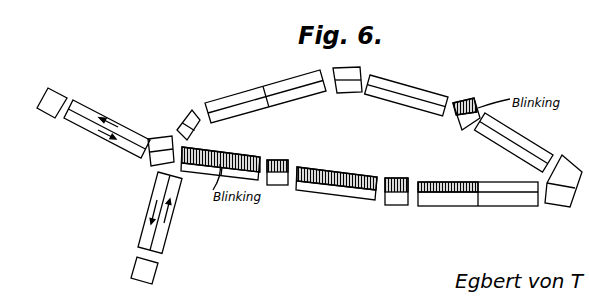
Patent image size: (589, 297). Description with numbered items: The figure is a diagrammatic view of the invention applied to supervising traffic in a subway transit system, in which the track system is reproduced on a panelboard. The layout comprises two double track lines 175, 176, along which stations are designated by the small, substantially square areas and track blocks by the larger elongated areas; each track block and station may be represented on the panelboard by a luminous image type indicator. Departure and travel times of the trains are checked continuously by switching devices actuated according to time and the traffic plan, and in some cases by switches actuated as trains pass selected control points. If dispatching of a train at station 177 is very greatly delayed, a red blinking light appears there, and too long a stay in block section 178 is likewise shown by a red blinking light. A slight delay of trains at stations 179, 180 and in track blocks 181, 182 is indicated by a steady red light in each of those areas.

The double track line 175 is at (358, 99).
The double track line 176 is at (358, 165).
The station 177 is at (472, 99).
The block section 178 is at (245, 146).
The station 179 is at (275, 160).
The station 180 is at (398, 178).
The track block 181 is at (336, 170).
The track block 182 is at (450, 182).